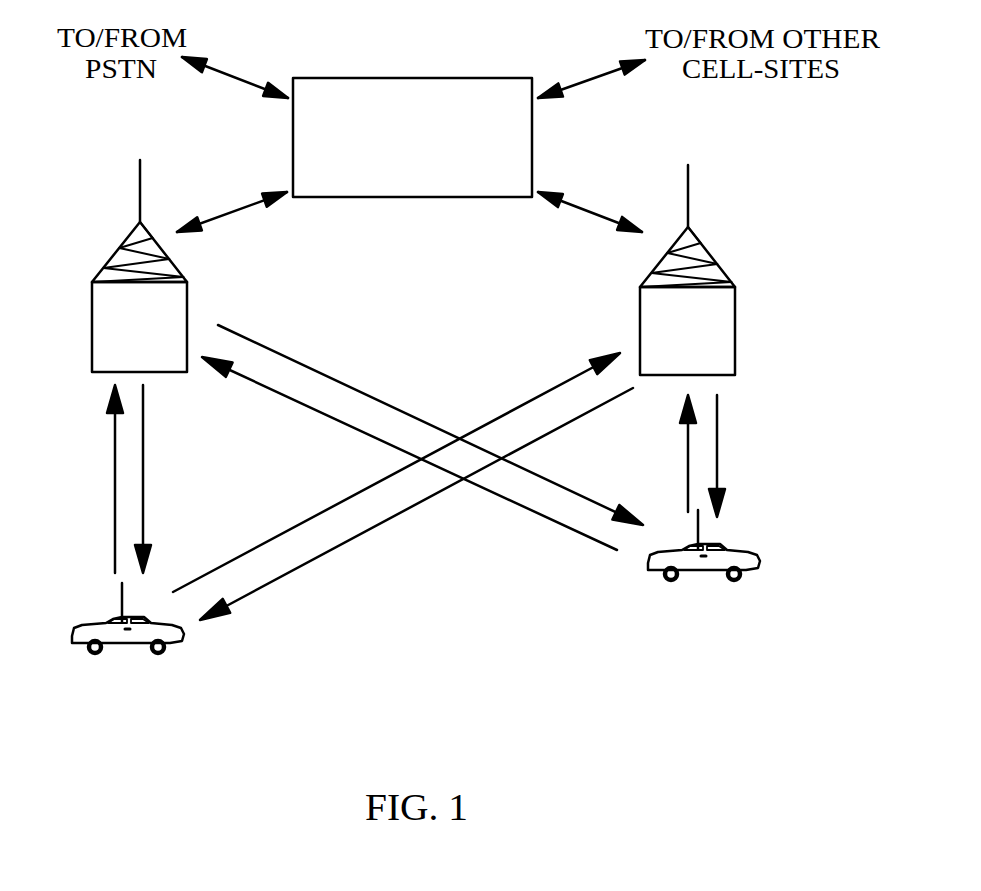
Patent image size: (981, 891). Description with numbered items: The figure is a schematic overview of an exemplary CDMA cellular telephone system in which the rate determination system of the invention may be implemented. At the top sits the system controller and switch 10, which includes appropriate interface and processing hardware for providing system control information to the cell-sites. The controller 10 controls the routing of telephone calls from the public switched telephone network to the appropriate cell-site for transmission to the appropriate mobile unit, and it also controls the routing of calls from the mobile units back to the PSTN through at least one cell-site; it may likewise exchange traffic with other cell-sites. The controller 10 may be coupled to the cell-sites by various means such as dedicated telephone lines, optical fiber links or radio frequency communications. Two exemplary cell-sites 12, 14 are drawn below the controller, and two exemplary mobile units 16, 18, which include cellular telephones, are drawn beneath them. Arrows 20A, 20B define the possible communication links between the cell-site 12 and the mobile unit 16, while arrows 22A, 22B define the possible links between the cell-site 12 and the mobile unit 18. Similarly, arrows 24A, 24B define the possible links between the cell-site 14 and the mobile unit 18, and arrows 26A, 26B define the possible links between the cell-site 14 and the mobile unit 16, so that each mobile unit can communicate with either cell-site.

The system controller and switch 10 is at (455, 77).
The cell-site 12 is at (122, 243).
The cell-site 14 is at (712, 250).
The mobile unit 16 is at (138, 648).
The mobile unit 18 is at (717, 573).
The arrow 20A is at (145, 523).
The arrow 20B is at (113, 493).
The arrow 22A is at (347, 382).
The arrow 22B is at (285, 395).
The arrow 24A is at (718, 458).
The arrow 24B is at (687, 492).
The arrow 26A is at (322, 558).
The arrow 26B is at (348, 500).